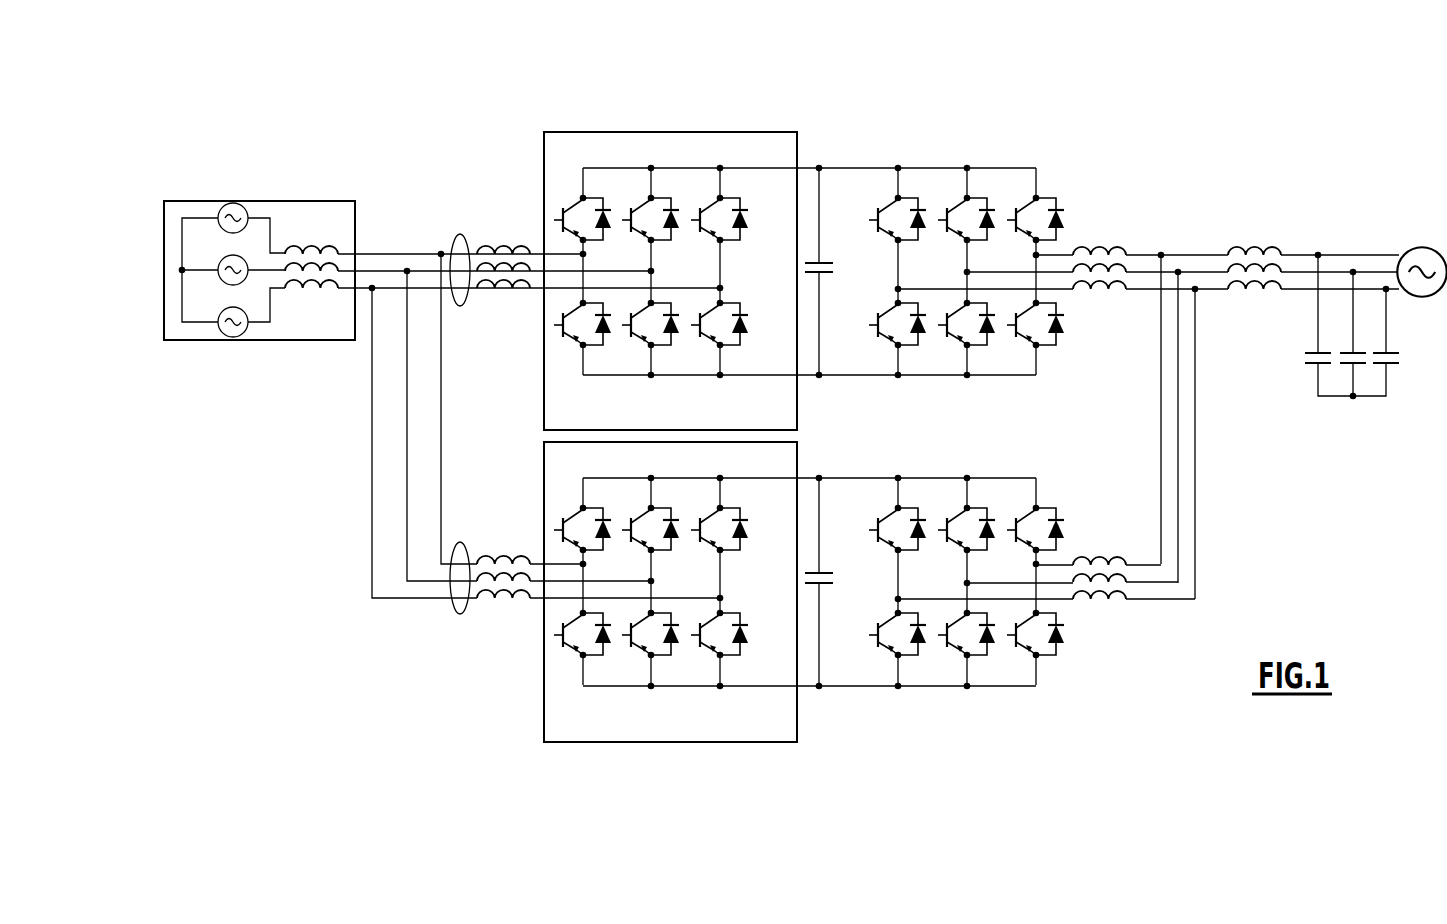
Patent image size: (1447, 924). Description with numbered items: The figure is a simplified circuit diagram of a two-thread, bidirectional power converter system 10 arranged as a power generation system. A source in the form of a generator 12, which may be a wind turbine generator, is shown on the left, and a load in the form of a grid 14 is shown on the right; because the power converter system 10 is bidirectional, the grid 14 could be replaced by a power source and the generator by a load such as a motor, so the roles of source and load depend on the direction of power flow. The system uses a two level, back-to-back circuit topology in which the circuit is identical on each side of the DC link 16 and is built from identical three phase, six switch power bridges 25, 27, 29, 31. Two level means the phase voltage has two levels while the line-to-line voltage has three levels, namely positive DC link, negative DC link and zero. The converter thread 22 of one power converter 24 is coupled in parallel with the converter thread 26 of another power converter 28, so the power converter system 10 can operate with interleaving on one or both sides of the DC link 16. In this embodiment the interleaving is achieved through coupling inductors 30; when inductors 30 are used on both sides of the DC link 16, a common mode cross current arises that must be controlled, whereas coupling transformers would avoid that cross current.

The power converter system 10 is at (678, 35).
The generator 12 is at (164, 300).
The grid 14 is at (1399, 233).
The DC link 16 is at (819, 337).
The converter thread 22 is at (459, 234).
The power converter 24 is at (860, 100).
The power bridge 25 is at (544, 152).
The converter thread 26 is at (459, 614).
The power bridge 27 is at (1050, 176).
The power converter 28 is at (862, 758).
The power bridge 29 is at (1053, 665).
The coupling inductor 30 is at (500, 308).
The power bridge 31 is at (544, 700).